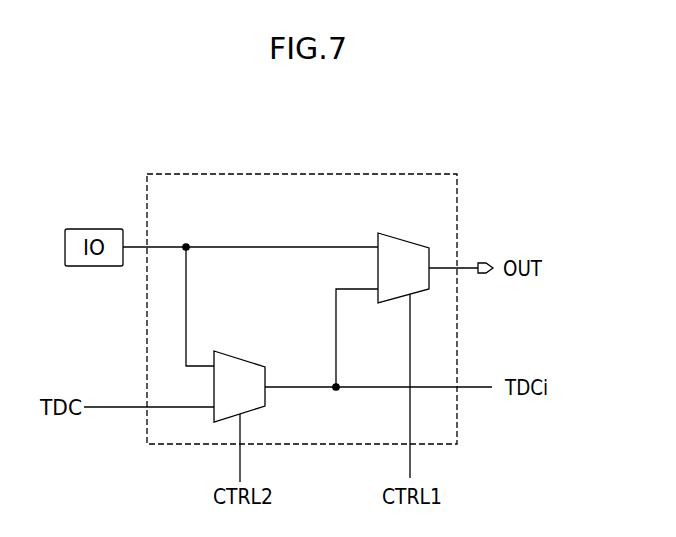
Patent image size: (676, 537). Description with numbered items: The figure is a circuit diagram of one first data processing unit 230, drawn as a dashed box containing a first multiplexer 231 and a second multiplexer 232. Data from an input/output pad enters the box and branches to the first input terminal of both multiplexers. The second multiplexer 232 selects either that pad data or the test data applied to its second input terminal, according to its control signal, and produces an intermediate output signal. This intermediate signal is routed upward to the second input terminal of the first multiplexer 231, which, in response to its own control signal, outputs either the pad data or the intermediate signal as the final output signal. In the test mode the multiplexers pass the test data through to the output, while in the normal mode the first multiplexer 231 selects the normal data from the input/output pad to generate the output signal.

The first data processing unit 230 is at (374, 173).
The first multiplexer 231 is at (394, 238).
The second multiplexer 232 is at (231, 356).